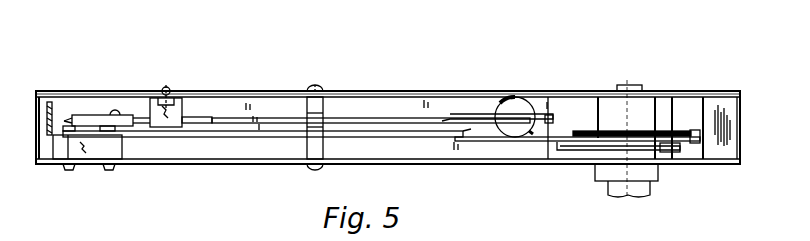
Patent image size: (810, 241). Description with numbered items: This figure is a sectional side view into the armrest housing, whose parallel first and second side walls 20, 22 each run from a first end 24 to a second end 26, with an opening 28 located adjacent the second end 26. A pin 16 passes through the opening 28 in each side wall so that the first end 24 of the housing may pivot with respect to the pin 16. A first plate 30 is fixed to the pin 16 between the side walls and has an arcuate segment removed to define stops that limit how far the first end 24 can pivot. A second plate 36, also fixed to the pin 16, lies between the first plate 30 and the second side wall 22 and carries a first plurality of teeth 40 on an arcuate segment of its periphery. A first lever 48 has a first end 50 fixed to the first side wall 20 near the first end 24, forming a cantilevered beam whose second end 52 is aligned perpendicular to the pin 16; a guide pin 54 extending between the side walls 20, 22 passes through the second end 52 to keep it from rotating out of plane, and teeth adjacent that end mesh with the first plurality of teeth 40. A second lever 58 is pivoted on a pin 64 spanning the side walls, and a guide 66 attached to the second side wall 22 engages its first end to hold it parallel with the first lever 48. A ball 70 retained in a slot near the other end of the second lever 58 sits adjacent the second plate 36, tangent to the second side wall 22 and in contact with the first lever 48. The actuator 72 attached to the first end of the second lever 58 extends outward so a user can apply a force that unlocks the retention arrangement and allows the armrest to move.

The pin 16 is at (620, 90).
The first side wall 20 is at (222, 167).
The second side wall 22 is at (257, 88).
The first end 24 is at (36, 108).
The second end 26 is at (742, 136).
The opening 28 is at (630, 85).
The first plate 30 is at (570, 151).
The second plate 36 is at (690, 122).
The first plurality of teeth 40 is at (706, 130).
The first lever 48 is at (478, 141).
The first end 50 is at (46, 130).
The second end 52 is at (665, 152).
The guide pin 54 is at (660, 100).
The second lever 58 is at (342, 118).
The pin 64 is at (322, 100).
The guide 66 is at (178, 110).
The ball 70 is at (520, 104).
The actuator 72 is at (97, 118).